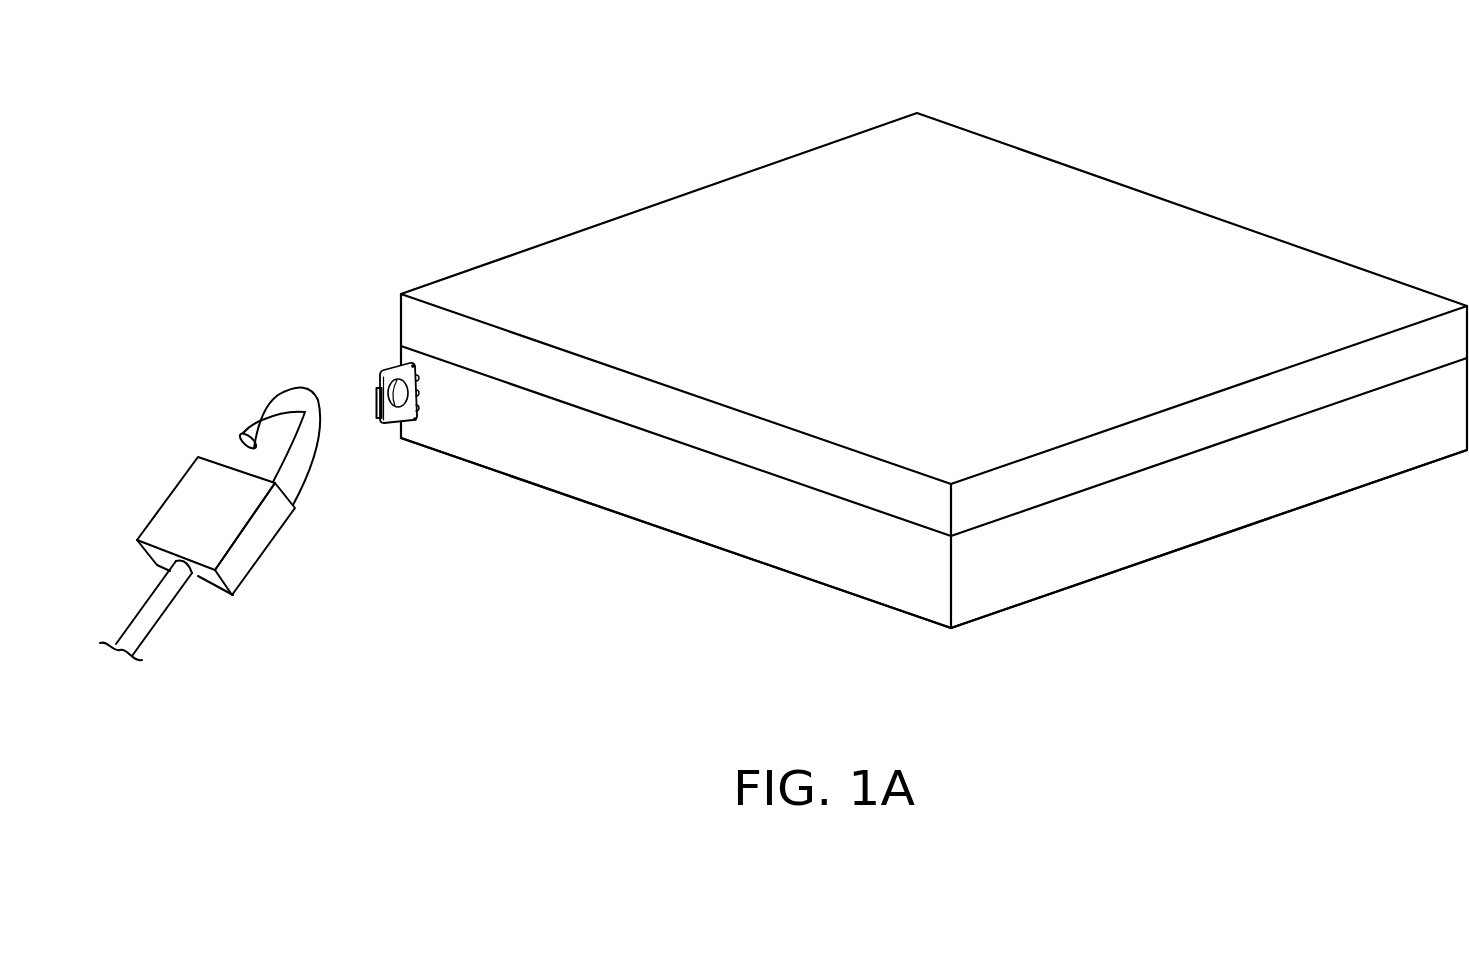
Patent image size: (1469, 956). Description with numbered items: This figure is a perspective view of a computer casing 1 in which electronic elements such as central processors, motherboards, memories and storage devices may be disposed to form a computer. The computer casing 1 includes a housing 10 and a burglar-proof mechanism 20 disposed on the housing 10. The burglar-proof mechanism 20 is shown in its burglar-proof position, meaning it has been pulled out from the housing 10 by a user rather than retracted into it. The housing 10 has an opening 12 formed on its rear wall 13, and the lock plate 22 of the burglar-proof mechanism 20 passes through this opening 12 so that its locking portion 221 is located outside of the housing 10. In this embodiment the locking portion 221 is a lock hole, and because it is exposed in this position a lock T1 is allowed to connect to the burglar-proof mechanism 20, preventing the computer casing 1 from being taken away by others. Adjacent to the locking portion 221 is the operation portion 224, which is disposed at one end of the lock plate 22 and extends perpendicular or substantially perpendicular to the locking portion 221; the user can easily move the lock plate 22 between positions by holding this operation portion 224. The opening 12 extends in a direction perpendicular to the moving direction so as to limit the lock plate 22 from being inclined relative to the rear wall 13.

The computer casing 1 is at (253, 99).
The housing 10 is at (1208, 194).
The opening 12 is at (412, 362).
The rear wall 13 is at (698, 512).
The burglar-proof mechanism 20 is at (399, 393).
The lock plate 22 is at (407, 493).
The locking portion 221 is at (392, 426).
The operation portion 224 is at (378, 424).
The lock T1 is at (215, 396).